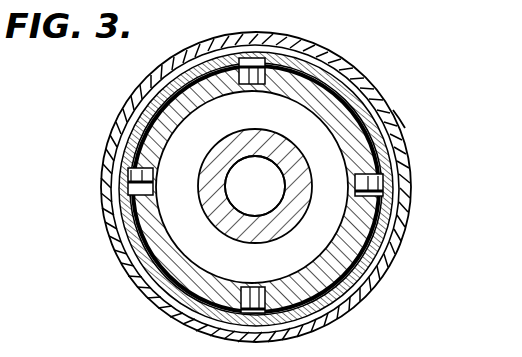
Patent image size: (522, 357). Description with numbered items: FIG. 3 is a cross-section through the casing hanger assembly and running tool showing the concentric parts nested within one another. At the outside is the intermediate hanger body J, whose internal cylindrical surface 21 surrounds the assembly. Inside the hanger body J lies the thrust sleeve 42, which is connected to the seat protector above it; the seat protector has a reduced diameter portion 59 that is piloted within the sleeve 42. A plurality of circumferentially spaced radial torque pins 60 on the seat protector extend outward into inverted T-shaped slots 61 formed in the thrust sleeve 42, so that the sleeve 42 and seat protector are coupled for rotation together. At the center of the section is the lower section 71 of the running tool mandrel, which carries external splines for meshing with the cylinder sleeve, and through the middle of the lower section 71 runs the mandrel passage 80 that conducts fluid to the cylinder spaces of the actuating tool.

The internal cylindrical surface 21 is at (168, 294).
The thrust sleeve 42 is at (372, 290).
The intermediate hanger body J is at (393, 110).
The radial torque pins 60 is at (298, 60).
The reduced diameter portion 59 is at (190, 104).
The inverted T-shaped slots 61 is at (241, 62).
The lower section of the running tool mandrel 71 is at (280, 228).
The mandrel passage 80 is at (270, 189).